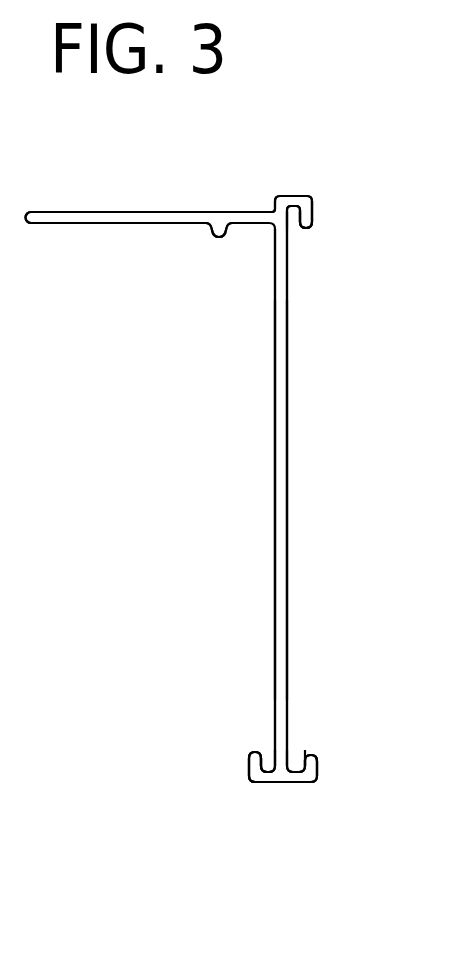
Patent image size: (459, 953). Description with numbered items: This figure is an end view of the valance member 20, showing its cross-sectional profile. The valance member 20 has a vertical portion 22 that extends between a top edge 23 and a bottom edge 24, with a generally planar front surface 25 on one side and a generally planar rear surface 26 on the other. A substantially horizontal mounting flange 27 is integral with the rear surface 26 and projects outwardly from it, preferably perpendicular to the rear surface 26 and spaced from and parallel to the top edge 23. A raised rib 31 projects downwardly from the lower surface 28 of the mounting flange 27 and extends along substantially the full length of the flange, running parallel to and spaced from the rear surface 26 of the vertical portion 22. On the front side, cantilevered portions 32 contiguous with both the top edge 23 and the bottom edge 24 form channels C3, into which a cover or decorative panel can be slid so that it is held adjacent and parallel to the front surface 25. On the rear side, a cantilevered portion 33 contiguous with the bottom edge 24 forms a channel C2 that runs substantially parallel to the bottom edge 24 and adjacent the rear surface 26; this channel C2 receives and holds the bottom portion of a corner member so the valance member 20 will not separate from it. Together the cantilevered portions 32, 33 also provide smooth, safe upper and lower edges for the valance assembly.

The valance member 20 is at (275, 447).
The vertical portion 22 is at (288, 361).
The top edge 23 is at (287, 193).
The bottom edge 24 is at (295, 783).
The front surface 25 is at (289, 427).
The rear surface 26 is at (277, 548).
The mounting flange 27 is at (157, 212).
The lower surface 28 is at (102, 226).
The raised rib 31 is at (220, 238).
The cantilevered portions 32 is at (311, 216).
The cantilevered portion 33 is at (250, 766).
The channel C2 is at (268, 749).
The channels C3 is at (293, 231).